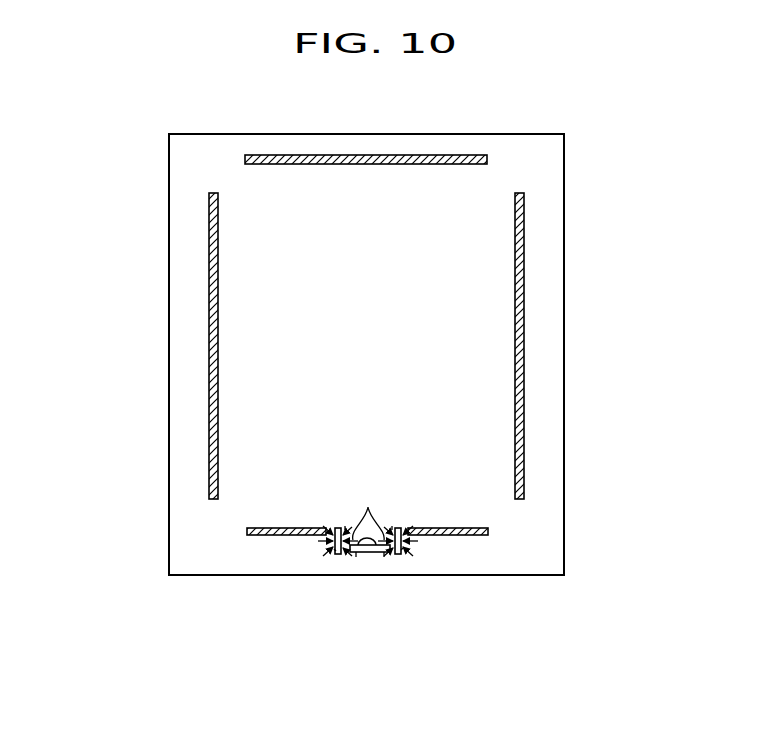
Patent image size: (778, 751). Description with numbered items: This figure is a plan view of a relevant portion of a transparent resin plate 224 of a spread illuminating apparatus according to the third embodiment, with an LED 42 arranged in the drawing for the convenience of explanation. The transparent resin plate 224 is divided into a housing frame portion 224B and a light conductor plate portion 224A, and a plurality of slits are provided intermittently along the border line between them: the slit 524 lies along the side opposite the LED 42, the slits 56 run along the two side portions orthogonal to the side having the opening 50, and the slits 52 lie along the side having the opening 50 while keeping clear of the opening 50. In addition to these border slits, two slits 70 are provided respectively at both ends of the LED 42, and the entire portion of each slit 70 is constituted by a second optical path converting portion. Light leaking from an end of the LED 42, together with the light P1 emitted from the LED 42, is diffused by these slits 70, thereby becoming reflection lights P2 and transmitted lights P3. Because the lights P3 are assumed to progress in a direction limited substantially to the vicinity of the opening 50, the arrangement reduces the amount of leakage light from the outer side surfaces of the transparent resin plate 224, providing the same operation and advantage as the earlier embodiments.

The transparent resin plate 224 is at (564, 408).
The light conductor plate portion 224A is at (400, 339).
The housing frame portion 224B is at (158, 444).
The top partition plate (524a) 524 is at (345, 155).
The third slits 56 is at (208, 281).
The slits 52 is at (258, 527).
The first slits 70 is at (336, 554).
The opening 50 is at (357, 560).
The LED 42 is at (377, 552).
The upward air flow P1 is at (368, 507).
The reflection lights P2 is at (345, 526).
The transmitted lights P3 is at (334, 549).